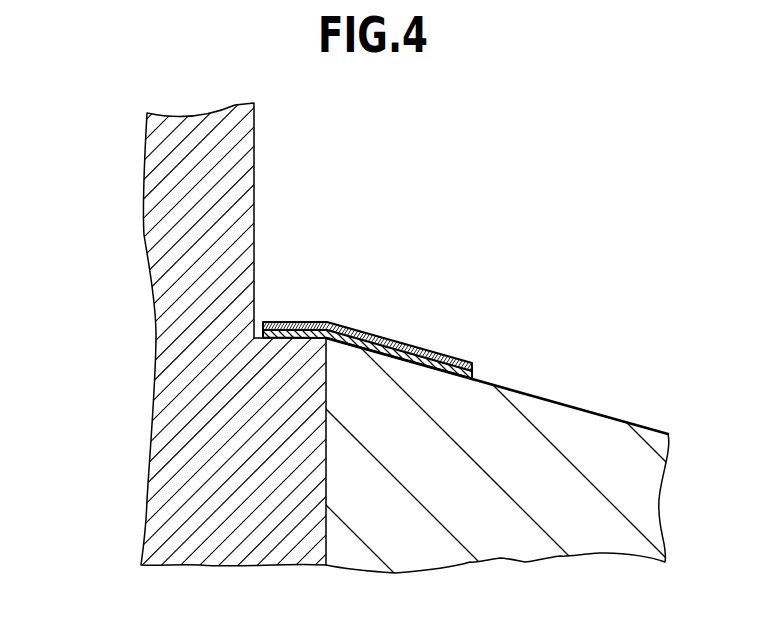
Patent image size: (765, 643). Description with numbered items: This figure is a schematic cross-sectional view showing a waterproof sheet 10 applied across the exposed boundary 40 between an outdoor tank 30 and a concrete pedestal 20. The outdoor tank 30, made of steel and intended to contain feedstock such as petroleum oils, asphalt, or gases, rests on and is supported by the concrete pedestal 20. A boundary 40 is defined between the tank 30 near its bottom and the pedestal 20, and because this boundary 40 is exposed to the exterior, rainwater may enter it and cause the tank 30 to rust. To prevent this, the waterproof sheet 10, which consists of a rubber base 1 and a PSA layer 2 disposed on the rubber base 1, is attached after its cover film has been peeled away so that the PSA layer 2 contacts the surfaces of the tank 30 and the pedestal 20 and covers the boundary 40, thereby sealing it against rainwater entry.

The rubber base 1 is at (433, 351).
The PSA layer 2 is at (415, 362).
The waterproof sheet 10 is at (373, 428).
The concrete pedestal 20 is at (563, 427).
The outdoor tank 30 is at (190, 219).
The boundary 40 is at (328, 322).